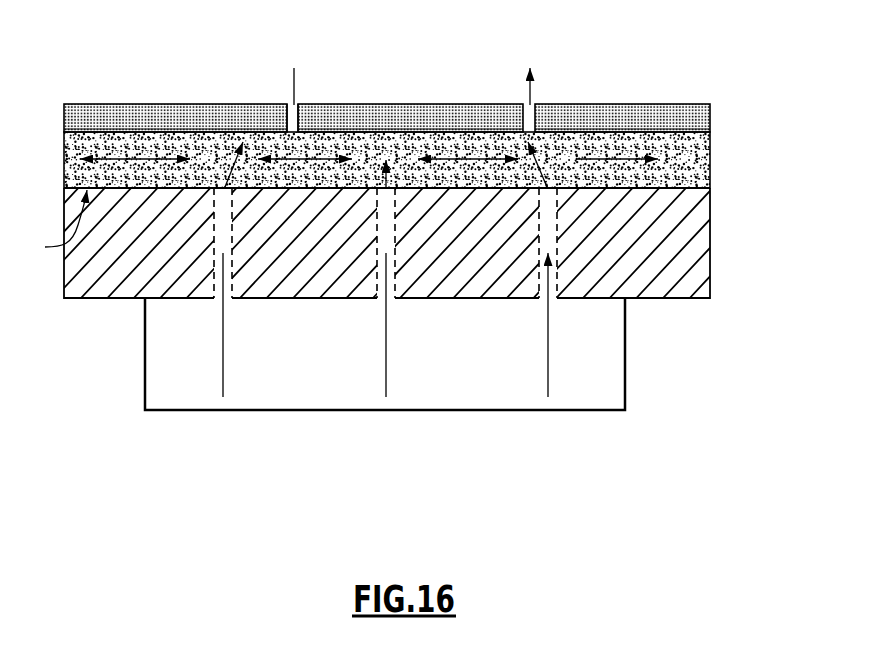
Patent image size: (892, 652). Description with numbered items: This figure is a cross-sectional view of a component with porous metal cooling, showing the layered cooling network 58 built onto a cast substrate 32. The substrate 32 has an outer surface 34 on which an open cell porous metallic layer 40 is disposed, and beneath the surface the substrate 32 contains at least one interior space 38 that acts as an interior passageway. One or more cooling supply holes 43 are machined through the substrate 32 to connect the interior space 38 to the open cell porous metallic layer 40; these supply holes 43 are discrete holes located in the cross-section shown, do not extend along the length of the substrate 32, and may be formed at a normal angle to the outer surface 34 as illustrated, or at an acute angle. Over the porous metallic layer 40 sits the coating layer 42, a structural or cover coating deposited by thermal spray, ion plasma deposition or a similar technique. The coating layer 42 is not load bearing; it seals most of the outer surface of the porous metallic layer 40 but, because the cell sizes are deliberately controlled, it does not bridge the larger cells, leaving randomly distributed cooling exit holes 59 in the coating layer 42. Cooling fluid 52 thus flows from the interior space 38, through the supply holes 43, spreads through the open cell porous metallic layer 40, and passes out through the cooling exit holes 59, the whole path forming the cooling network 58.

The substrate 32 is at (668, 254).
The outer surface 34 is at (52, 225).
The interior space 38 is at (597, 352).
The open cell porous metallic layer 40 is at (700, 163).
The coating layer 42 is at (390, 122).
The cooling supply holes 43 is at (225, 249).
The cooling fluid flow 52 is at (534, 93).
The cooling network 58 is at (734, 105).
The cooling exit holes 59 is at (287, 102).